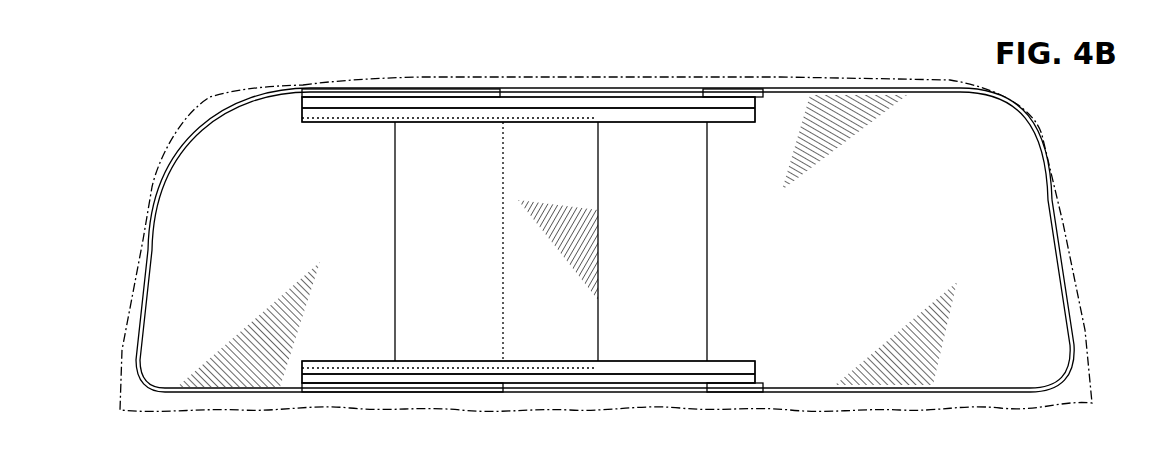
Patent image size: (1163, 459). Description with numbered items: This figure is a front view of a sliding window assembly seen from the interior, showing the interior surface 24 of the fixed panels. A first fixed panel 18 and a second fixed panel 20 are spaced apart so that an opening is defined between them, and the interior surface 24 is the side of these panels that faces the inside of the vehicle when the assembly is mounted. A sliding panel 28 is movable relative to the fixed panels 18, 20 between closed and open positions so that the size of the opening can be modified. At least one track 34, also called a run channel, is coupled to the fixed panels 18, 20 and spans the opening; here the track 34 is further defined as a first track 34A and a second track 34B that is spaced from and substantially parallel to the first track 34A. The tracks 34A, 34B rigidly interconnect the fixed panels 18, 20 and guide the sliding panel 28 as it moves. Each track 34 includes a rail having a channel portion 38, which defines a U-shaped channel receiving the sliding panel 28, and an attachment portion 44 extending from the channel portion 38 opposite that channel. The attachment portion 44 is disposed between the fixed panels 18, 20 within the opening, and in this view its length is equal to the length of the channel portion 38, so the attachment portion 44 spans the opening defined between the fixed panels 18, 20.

The first fixed panel 18 is at (997, 143).
The second fixed panel 20 is at (237, 133).
The interior surface 24 is at (567, 241).
The sliding panel 28 is at (587, 243).
The track 34 is at (646, 76).
The first track 34A is at (618, 122).
The second track 34B is at (687, 368).
The channel portion 38 is at (648, 116).
The attachment portion 44 is at (587, 97).